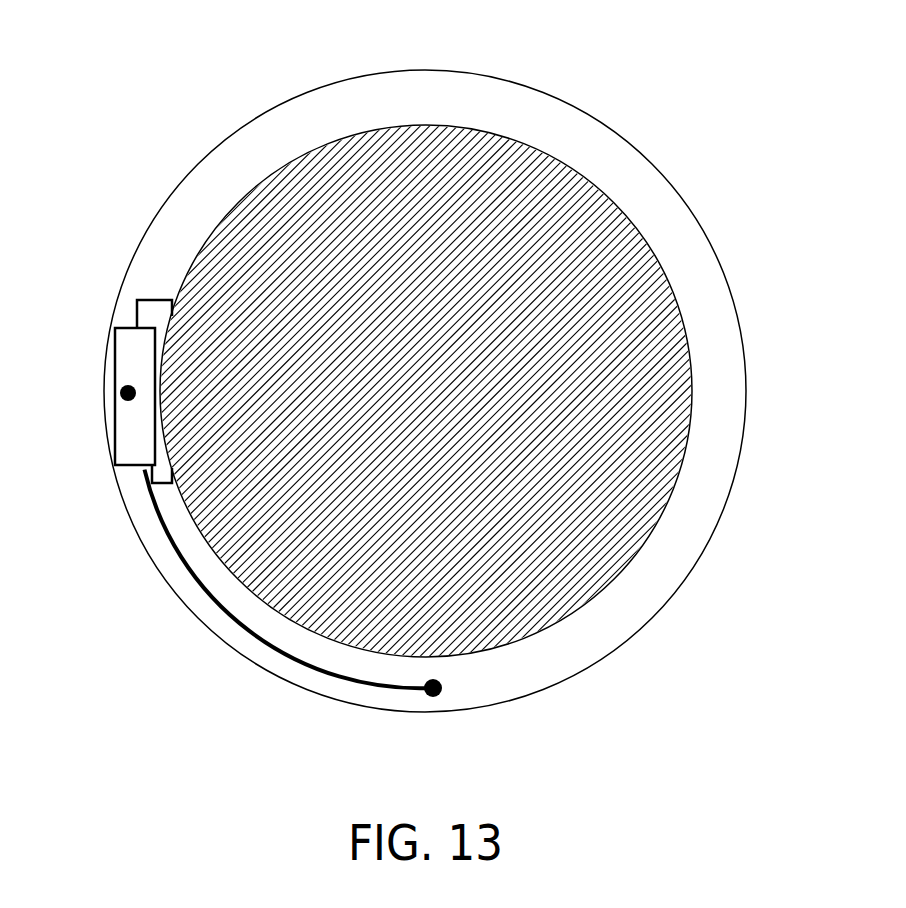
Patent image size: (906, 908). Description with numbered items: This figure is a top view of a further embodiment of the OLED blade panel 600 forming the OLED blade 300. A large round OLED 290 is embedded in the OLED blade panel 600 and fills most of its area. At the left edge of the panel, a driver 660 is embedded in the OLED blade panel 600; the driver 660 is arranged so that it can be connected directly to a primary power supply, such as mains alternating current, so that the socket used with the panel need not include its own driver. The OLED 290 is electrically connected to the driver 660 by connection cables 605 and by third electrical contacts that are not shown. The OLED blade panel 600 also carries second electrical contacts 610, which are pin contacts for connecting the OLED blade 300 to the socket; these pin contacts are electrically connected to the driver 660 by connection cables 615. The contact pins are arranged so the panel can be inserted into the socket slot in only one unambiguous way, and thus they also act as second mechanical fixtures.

The OLED blade 300 is at (124, 100).
The OLED blade panel 600 is at (613, 147).
The OLED 290 is at (445, 402).
The driver 660 is at (120, 352).
The connection cables 605 is at (163, 300).
The second electrical contacts 610 is at (120, 392).
The connection cables 615 is at (245, 627).